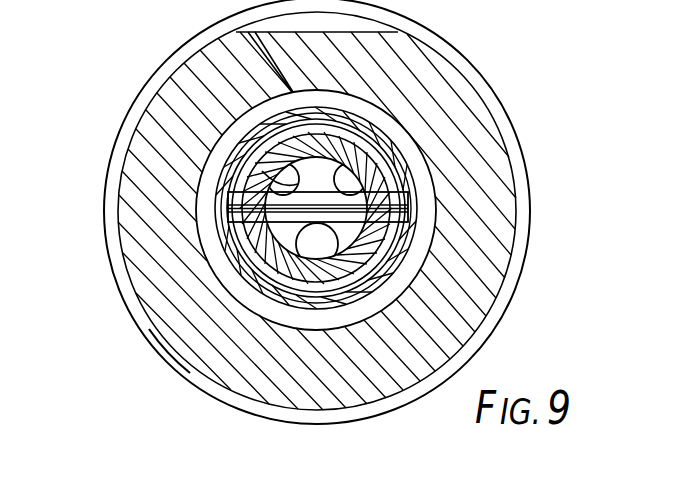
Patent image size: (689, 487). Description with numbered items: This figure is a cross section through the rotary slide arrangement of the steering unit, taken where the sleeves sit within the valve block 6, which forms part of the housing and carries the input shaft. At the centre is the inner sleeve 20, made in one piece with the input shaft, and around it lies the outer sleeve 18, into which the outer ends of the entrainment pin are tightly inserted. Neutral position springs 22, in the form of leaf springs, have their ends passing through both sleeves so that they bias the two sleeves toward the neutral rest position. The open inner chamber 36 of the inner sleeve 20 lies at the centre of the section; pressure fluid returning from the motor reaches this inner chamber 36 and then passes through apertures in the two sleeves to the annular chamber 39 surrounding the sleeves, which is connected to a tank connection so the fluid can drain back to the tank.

The valve block 6 is at (517, 137).
The outer sleeve 18 is at (333, 143).
The inner sleeve 20 is at (367, 147).
The neutral position springs 22 is at (287, 230).
The inner chamber 36 is at (300, 184).
The annular chamber 39 is at (432, 205).